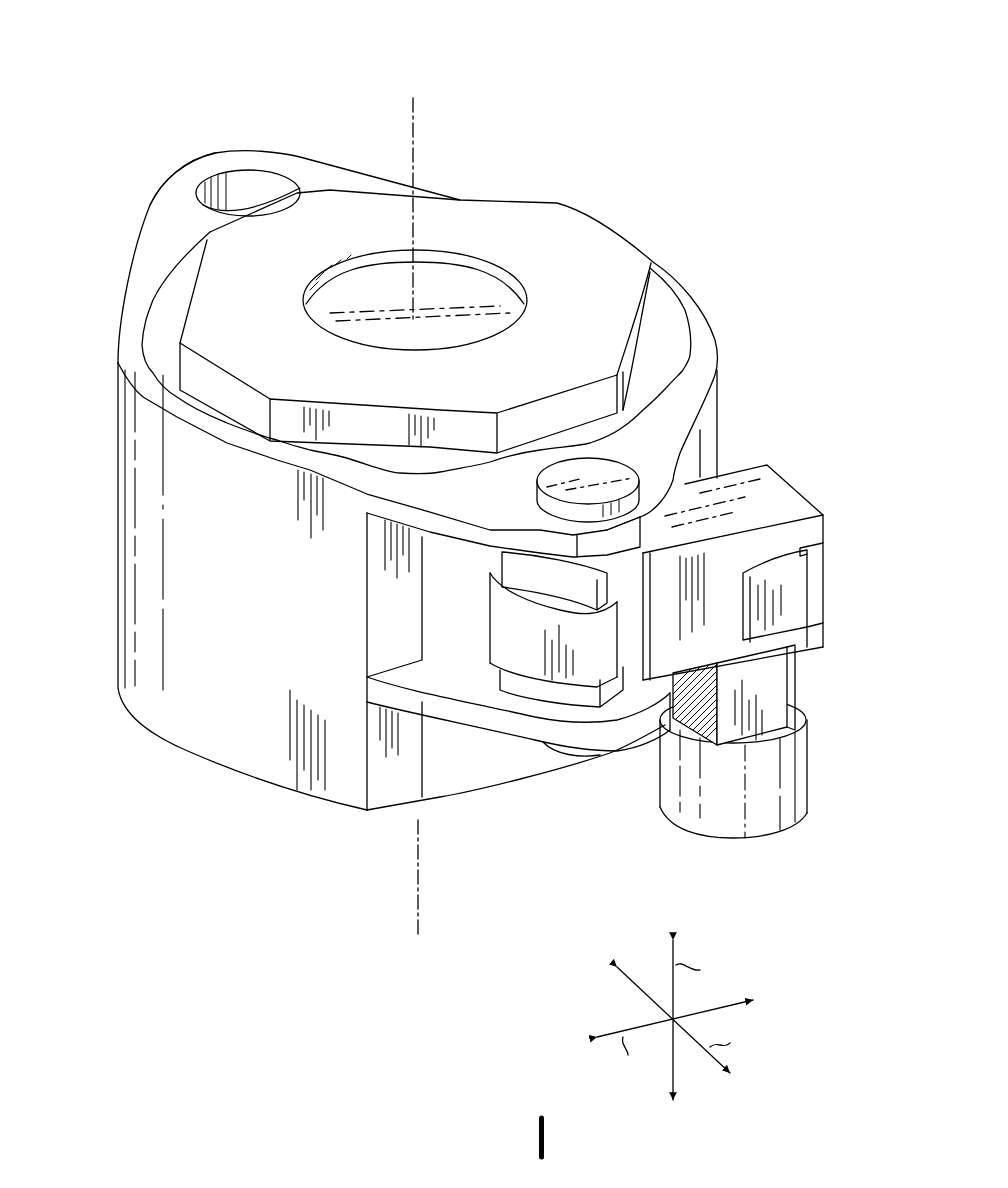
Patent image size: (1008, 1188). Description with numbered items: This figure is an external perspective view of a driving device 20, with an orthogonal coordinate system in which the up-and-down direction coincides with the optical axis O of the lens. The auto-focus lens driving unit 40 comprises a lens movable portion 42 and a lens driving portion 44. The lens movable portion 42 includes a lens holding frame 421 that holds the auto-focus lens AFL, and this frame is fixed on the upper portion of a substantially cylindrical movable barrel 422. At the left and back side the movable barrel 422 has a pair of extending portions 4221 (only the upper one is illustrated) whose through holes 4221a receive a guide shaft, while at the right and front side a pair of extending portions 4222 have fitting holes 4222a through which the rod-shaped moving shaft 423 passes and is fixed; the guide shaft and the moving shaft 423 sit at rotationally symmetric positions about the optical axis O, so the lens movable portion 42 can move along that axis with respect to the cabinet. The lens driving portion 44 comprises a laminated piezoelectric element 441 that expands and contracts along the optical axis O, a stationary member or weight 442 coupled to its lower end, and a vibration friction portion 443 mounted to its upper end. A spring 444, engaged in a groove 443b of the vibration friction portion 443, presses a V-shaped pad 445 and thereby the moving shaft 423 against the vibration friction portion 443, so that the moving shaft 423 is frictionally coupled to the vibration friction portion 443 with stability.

The driving device 20 is at (634, 121).
The auto-focus lens driving unit 40 is at (739, 297).
The lens movable portion 42 is at (683, 263).
The lens holding frame 421 is at (573, 230).
The extending portion 4221 is at (153, 252).
The through hole 4221a is at (248, 180).
The movable barrel 422 is at (133, 532).
The extending portion 4222 is at (487, 500).
The fitting hole 4222a is at (705, 415).
The rod-shaped moving shaft 423 is at (640, 640).
The lens driving portion 44 is at (843, 517).
The laminated piezoelectric element 441 is at (773, 683).
The stationary member (weight) 442 is at (793, 788).
The vibration friction portion 443 is at (793, 497).
The groove 443b is at (820, 613).
The spring 444 is at (808, 570).
The pad 445 is at (540, 690).
The auto-focus lens AFL is at (460, 300).
The optical axis O is at (413, 103).